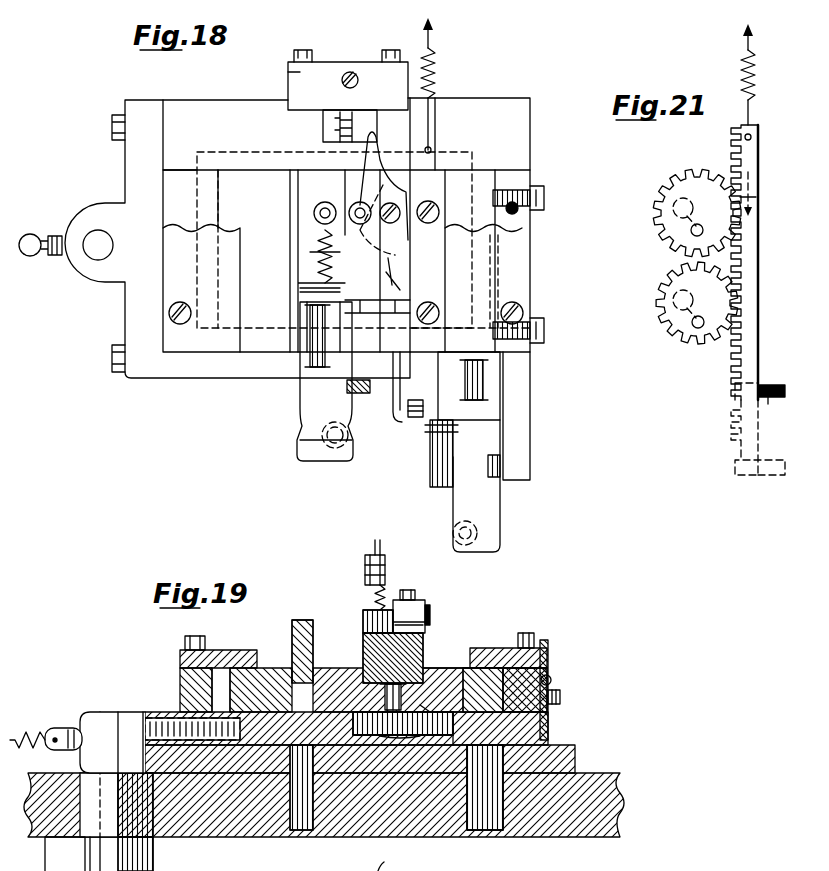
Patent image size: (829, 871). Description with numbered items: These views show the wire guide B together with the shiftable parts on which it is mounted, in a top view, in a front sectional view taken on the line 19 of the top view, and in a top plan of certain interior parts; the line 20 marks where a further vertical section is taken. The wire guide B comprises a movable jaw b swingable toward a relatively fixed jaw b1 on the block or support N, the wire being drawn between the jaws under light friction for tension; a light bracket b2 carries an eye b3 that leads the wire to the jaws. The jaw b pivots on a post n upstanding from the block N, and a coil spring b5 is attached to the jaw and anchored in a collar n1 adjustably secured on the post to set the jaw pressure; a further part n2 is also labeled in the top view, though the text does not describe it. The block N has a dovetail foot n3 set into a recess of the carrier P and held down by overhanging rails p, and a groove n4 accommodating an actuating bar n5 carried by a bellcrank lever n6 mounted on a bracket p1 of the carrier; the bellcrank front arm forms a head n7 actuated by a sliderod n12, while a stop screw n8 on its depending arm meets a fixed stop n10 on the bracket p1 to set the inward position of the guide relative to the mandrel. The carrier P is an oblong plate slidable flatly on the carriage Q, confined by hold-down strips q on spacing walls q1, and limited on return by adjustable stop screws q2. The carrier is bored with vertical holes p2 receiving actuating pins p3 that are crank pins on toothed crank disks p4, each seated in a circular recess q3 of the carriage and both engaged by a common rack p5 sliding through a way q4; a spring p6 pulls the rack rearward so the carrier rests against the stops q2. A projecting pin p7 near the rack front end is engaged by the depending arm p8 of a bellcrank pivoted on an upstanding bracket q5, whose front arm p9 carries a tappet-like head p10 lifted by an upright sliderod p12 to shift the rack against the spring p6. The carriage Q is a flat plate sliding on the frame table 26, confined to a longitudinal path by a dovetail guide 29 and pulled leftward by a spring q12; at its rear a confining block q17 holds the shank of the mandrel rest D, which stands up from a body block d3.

In FIG. 18, the carriage Q is at (208, 190).
In FIG. 18, the hold-down strips q is at (229, 240).
In FIG. 19, the hold-down strips q is at (180, 658).
In FIG. 18, the carriage end walls q1 is at (178, 172).
In FIG. 19, the carriage end walls q1 is at (185, 684).
In FIG. 18, the adjustable stop screws q2 is at (546, 192).
In FIG. 19, the adjustable stop screws q2 is at (561, 696).
In FIG. 19, the circular recesses q3 is at (352, 715).
In FIG. 19, the way q4 is at (458, 719).
In FIG. 18, the upstanding bracket q5 is at (532, 447).
In FIG. 18, the spring q12 is at (4, 256).
In FIG. 19, the spring q12 is at (16, 750).
In FIG. 18, the confining block q17 is at (300, 72).
In FIG. 18, the carrier P is at (317, 252).
In FIG. 19, the carrier P is at (256, 652).
In FIG. 19, the guide bars or rails p is at (462, 664).
In FIG. 18, the bracket p1 is at (308, 254).
In FIG. 19, the bracket p1 is at (296, 614).
In FIG. 19, the vertical holes p2 is at (423, 706).
In FIG. 21, the actuating pins p3 is at (691, 230).
In FIG. 19, the actuating pins p3 is at (385, 692).
In FIG. 21, the crank disks p4 is at (694, 188).
In FIG. 19, the crank disks p4 is at (398, 736).
In FIG. 18, the actuating rack p5 is at (438, 156).
In FIG. 21, the actuating rack p5 is at (740, 374).
In FIG. 19, the actuating rack p5 is at (438, 738).
In FIG. 18, the spring p6 is at (438, 60).
In FIG. 21, the spring p6 is at (752, 55).
In FIG. 18, the projecting pin p7 is at (474, 404).
In FIG. 21, the projecting pin p7 is at (770, 400).
In FIG. 18, the depending arm p8 is at (453, 416).
In FIG. 18, the front arm p9 is at (484, 508).
In FIG. 18, the head p10 is at (488, 543).
In FIG. 18, the sliderod p12 is at (480, 550).
In FIG. 18, the post or pin n is at (355, 207).
In FIG. 19, the post or pin n is at (378, 870).
In FIG. 18, the collar n1 is at (350, 218).
In FIG. 19, the collar n1 is at (372, 562).
In FIG. 18, the pawl spring n2 is at (316, 272).
In FIG. 19, the dovetail foot n3 is at (446, 654).
In FIG. 18, the groove n4 is at (380, 386).
In FIG. 18, the actuating bar n5 is at (402, 398).
In FIG. 18, the bellcrank lever n6 is at (300, 404).
In FIG. 18, the head n7 is at (300, 447).
In FIG. 18, the stop screw n8 is at (292, 350).
In FIG. 18, the fixed stop n10 is at (300, 300).
In FIG. 18, the sliderod n12 is at (326, 450).
In FIG. 18, the block or support N is at (393, 273).
In FIG. 19, the block or support N is at (363, 648).
In FIG. 18, the wire guide B is at (382, 142).
In FIG. 19, the movable jaw b is at (363, 613).
In FIG. 19, the fixed jaw b1 is at (427, 615).
In FIG. 18, the bracket b2 is at (403, 262).
In FIG. 19, the bracket b2 is at (420, 602).
In FIG. 18, the eye b3 is at (398, 293).
In FIG. 19, the eye b3 is at (422, 626).
In FIG. 19, the coil spring b5 is at (368, 602).
In FIG. 18, the mandrel rest D is at (348, 80).
In FIG. 18, the body portion or block d3 is at (331, 118).
In FIG. 19, the frame table 26 is at (598, 806).
In FIG. 19, the dovetail guide 29 is at (564, 757).
In FIG. 18, the section line 19— 19 is at (98, 310).
In FIG. 18, the section line 20— 20 is at (372, 52).
In FIG. 19, the section line 20— 20 is at (392, 560).